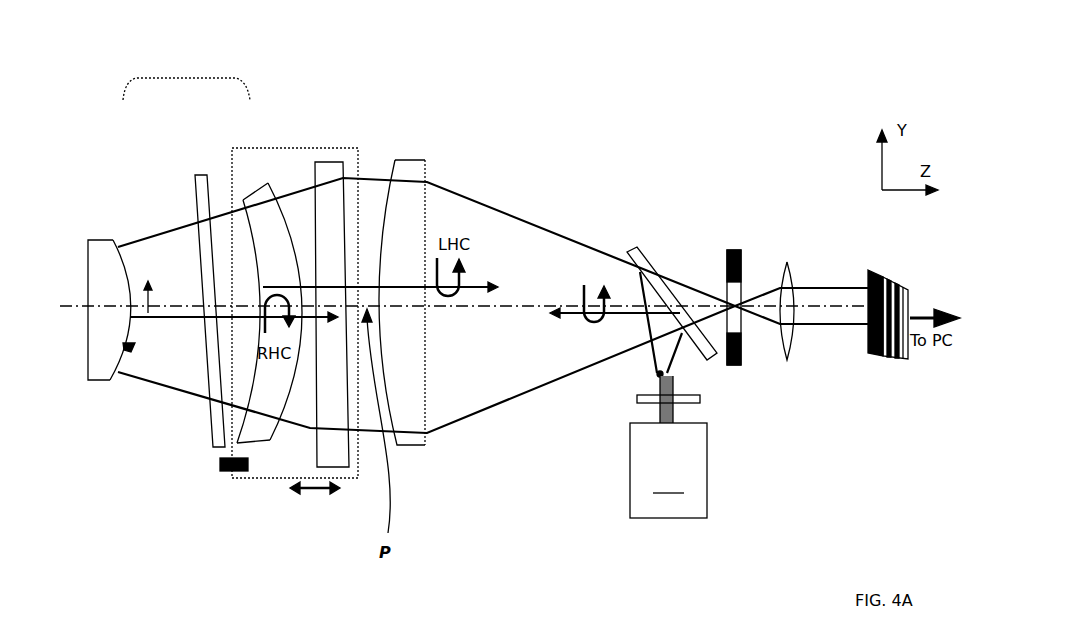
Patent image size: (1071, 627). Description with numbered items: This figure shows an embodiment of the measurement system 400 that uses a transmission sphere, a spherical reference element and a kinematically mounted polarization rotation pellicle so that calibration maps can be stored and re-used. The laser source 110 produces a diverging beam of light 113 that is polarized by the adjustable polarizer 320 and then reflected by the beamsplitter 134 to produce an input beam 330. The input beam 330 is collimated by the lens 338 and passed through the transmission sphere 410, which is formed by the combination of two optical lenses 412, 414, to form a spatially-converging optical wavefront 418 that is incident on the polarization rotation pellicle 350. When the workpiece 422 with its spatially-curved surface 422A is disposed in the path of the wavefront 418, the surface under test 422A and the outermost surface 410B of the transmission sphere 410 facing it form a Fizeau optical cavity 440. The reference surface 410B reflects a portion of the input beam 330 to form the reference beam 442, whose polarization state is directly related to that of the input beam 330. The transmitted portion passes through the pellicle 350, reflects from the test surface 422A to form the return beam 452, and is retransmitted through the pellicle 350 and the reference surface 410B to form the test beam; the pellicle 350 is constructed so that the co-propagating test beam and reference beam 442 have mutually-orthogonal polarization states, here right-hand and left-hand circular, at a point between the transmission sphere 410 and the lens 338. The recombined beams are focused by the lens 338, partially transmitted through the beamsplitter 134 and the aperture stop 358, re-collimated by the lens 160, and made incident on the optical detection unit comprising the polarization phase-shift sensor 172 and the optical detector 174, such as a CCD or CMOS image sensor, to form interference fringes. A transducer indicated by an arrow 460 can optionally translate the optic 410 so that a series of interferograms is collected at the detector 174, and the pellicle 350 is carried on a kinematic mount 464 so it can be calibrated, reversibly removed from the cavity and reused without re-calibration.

The laser source 110 is at (668, 470).
The diverging beam of light 113 is at (657, 375).
The beamsplitter 134 is at (637, 245).
The lens 160 is at (787, 262).
The polarization phase-shift sensor 172 is at (888, 358).
The optical detector 174 is at (900, 358).
The adjustable polarizer 320 is at (700, 400).
The input beam 330 is at (615, 309).
The lens 338 is at (427, 160).
The polarization rotation pellicle 350 is at (197, 177).
The aperture stop 358 is at (732, 247).
The measurement system 400 is at (615, 128).
The transmission sphere 410 is at (322, 148).
The outermost surface of the transmission sphere 410B is at (279, 315).
The optical lens 412 is at (337, 457).
The optical lens 414 is at (263, 450).
The spatially-converging optical wavefront 418 is at (183, 390).
The workpiece 422 is at (100, 363).
The spatially-curved surface 422A is at (130, 343).
The Fizeau optical cavity 440 is at (187, 78).
The reference beam 442 is at (422, 289).
The return beam 452 is at (190, 313).
The transducer/spatial repositioning device 460 is at (323, 495).
The kinematic mount 464 is at (218, 470).